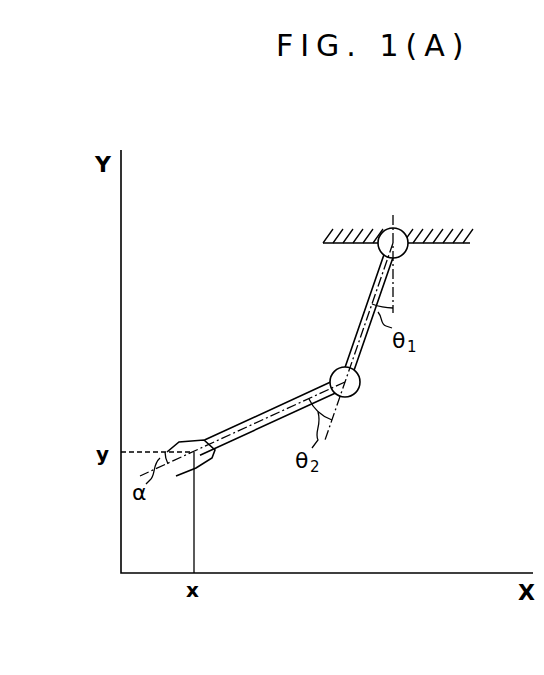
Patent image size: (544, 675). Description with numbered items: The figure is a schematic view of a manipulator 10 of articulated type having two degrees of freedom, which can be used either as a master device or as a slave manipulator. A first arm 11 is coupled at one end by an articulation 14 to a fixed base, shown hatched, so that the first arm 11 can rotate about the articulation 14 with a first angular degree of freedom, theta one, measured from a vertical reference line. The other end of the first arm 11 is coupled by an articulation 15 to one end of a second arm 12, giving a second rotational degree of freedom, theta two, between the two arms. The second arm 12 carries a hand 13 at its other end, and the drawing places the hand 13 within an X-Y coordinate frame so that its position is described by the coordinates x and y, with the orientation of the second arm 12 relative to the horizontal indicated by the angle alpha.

The manipulator 10 is at (278, 334).
The first arm 11 is at (358, 316).
The second arm 12 is at (240, 430).
The hand 13 is at (183, 440).
The articulation 14 is at (408, 250).
The articulation 15 is at (360, 387).